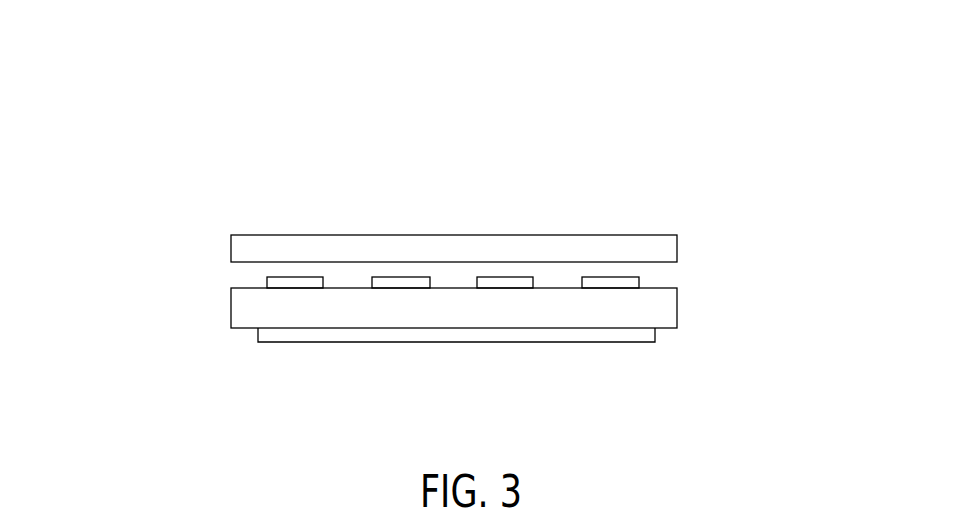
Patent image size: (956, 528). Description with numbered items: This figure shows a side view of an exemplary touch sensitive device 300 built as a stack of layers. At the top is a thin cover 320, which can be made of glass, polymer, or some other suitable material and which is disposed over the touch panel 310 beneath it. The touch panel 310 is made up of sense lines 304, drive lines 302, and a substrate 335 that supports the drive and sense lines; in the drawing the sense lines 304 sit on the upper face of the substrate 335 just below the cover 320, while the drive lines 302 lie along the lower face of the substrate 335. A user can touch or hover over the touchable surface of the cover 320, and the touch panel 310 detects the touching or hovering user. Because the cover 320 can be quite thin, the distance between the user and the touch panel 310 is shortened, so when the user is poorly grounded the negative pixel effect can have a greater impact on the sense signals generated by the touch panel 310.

The touch sensitive device 300 is at (226, 158).
The cover 320 is at (677, 244).
The sense lines 304 is at (266, 280).
The substrate 335 is at (231, 310).
The drive lines 302 is at (273, 343).
The touch panel 310 is at (687, 272).